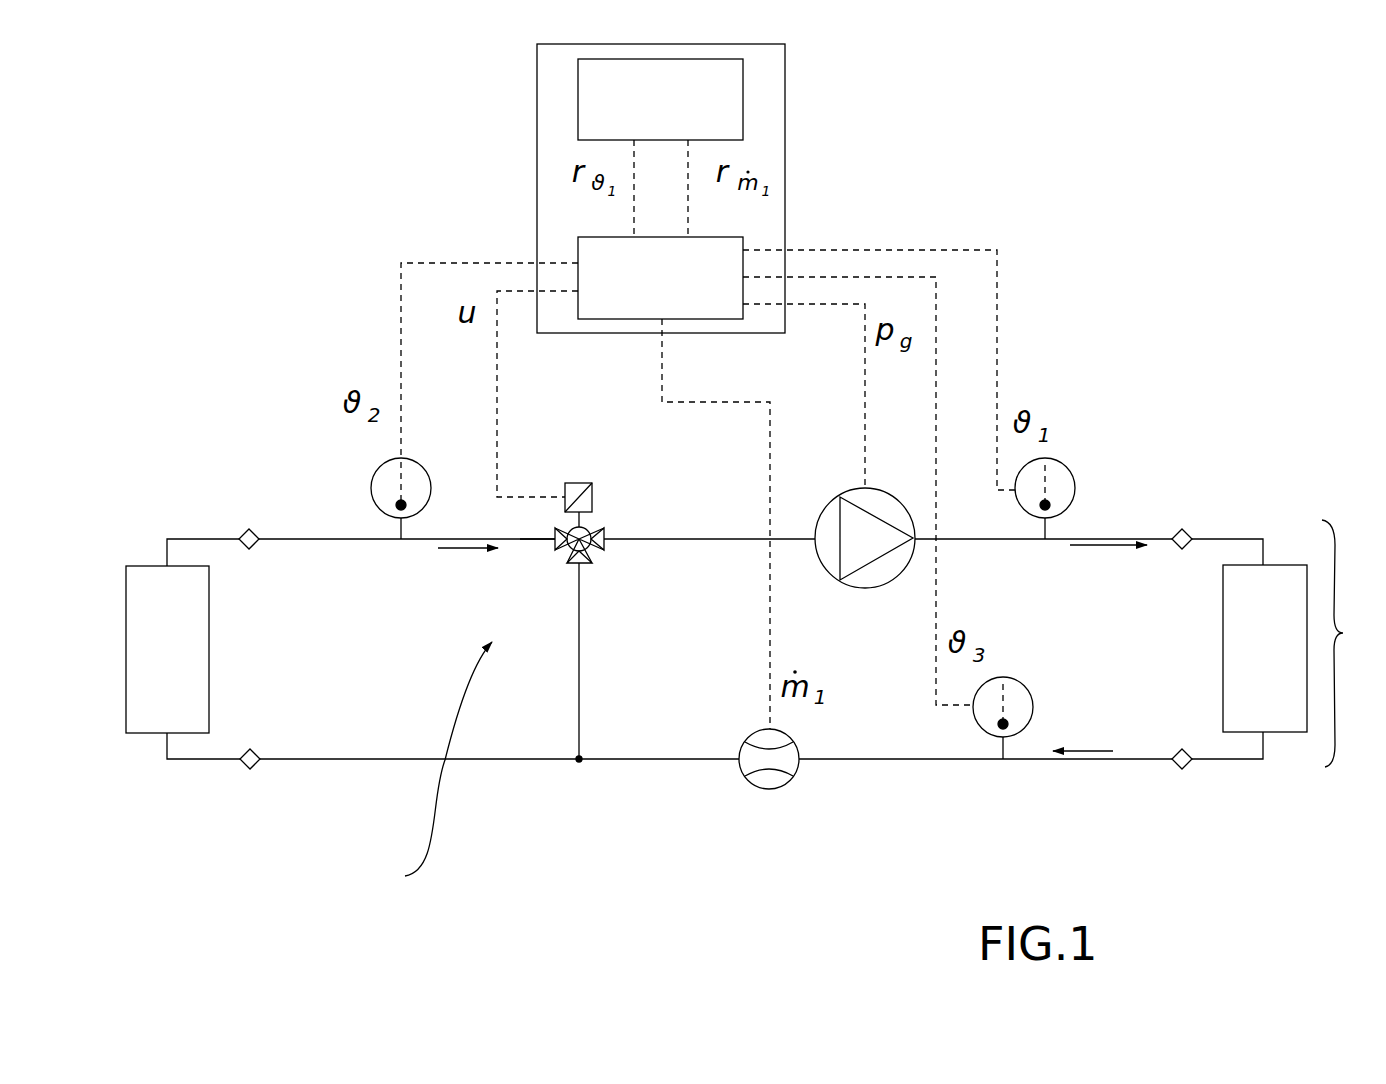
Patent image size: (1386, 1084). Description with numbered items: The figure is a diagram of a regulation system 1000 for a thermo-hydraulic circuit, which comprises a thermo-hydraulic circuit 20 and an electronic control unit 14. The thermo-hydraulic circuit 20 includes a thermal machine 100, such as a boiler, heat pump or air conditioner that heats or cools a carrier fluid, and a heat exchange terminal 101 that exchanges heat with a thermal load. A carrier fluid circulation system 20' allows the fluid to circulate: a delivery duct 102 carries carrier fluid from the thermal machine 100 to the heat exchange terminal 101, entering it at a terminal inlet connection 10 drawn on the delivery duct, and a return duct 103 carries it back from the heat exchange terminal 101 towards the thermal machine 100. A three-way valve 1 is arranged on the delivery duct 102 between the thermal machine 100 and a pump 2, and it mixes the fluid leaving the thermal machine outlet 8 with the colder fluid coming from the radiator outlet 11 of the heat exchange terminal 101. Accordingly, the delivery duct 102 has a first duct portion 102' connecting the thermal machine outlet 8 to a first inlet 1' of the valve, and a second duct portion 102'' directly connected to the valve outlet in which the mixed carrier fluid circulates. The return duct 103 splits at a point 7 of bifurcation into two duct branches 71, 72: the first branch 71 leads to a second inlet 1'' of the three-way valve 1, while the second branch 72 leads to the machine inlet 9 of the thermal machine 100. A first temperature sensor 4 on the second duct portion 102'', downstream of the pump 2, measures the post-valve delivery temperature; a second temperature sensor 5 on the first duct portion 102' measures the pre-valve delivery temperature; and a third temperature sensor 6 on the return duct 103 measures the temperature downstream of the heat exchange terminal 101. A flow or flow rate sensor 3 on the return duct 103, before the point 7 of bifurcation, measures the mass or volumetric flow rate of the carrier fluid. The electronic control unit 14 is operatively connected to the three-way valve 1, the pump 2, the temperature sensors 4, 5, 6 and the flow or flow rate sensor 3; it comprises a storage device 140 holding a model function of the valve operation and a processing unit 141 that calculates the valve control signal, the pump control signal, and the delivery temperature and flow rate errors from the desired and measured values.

The three-way valve 1 is at (601, 504).
The first inlet 1' is at (424, 416).
The second inlet 1'' is at (548, 743).
The pump 2 is at (868, 589).
The flow or flow rate sensor 3 is at (770, 790).
The first temperature sensor 4 is at (1065, 466).
The second temperature sensor 5 is at (373, 487).
The third temperature sensor 6 is at (1022, 683).
The point of bifurcation 7 is at (578, 760).
The thermal machine outlet 8 is at (249, 529).
The machine inlet 9 is at (254, 767).
The connection point 10 is at (1188, 530).
The radiator outlet 11 is at (1188, 770).
The electronic control unit 14 is at (721, 188).
The thermo-hydraulic circuit 20 is at (1350, 643).
The carrier fluid circulation system 20' is at (426, 767).
The first branch 71 is at (581, 673).
The second branch 72 is at (313, 761).
The thermal machine 100 is at (167, 649).
The heat exchange terminal 101 is at (1265, 648).
The delivery duct 102 is at (1089, 509).
The first duct portion 102' is at (361, 470).
The second duct portion 102'' is at (709, 498).
The return duct 103 is at (1078, 762).
The storage device 140 is at (660, 99).
The processing unit 141 is at (660, 278).
The regulation system 1000 is at (1192, 182).